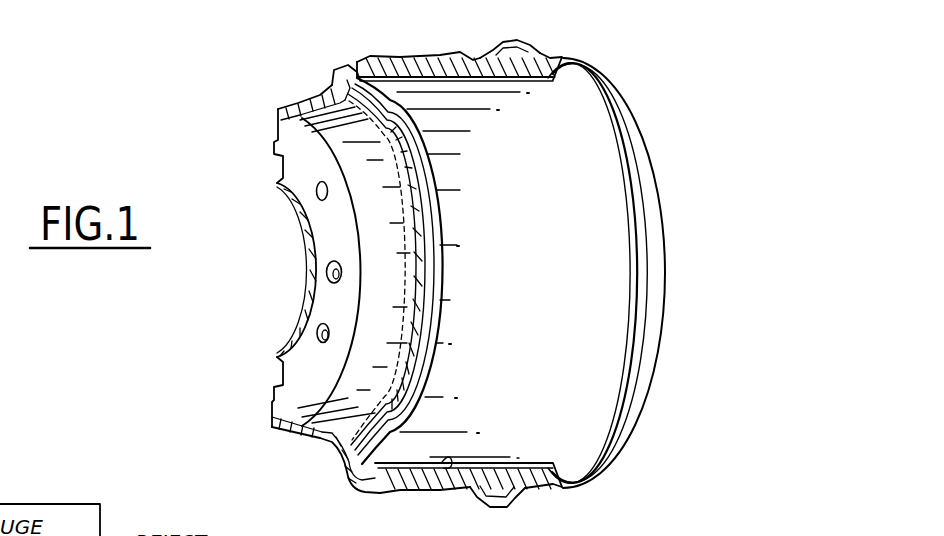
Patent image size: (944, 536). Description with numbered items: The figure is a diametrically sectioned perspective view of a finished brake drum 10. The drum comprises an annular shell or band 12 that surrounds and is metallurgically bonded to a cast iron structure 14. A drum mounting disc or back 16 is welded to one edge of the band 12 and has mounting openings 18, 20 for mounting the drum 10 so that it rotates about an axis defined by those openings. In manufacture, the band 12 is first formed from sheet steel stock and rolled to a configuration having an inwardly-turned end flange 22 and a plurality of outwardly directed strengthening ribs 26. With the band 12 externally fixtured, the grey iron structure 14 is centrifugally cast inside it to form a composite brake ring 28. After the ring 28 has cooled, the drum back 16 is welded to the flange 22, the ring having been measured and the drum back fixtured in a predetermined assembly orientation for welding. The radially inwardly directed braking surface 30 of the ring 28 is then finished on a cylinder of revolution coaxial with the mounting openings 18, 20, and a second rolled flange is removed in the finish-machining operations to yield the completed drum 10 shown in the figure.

The brake drum 10 is at (260, 49).
The annular shell or band 12 is at (423, 58).
The cast iron structure 14 is at (560, 55).
The drum mounting disc or back 16 is at (278, 108).
The mounting opening 18 is at (297, 204).
The mounting openings 20 is at (320, 333).
The inwardly-turned end flange 22 is at (345, 85).
The outwardly directed strengthening ribs 26 is at (491, 504).
The composite brake ring 28 is at (524, 35).
The braking surface 30 is at (442, 462).